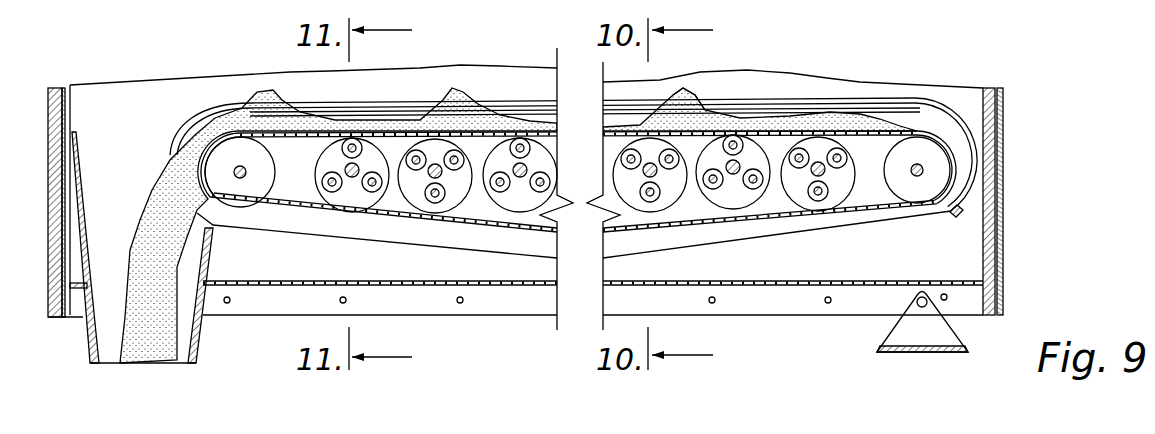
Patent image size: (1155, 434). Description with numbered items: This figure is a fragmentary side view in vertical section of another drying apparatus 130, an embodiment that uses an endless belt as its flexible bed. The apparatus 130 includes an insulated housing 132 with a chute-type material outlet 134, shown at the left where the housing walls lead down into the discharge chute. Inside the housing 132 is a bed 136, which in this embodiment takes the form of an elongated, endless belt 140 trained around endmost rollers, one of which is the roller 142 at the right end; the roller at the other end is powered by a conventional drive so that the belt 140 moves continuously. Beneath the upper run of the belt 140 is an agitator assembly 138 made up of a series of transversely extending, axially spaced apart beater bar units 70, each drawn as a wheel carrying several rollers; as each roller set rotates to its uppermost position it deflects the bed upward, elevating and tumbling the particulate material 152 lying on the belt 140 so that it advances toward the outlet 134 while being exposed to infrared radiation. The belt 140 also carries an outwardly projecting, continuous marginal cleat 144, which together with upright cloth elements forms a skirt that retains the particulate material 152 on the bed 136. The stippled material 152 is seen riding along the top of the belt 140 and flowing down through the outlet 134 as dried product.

The beater bar unit 70 is at (378, 209).
The drying apparatus 130 is at (1032, 82).
The insulated housing 132 is at (1020, 192).
The chute-type material outlet 134 is at (193, 343).
The bed 136 is at (890, 111).
The agitator assembly 138 is at (518, 220).
The endless belt 140 is at (222, 162).
The endmost roller 142 is at (937, 163).
The marginal cleat 144 is at (807, 120).
The particulate material 152 is at (690, 98).